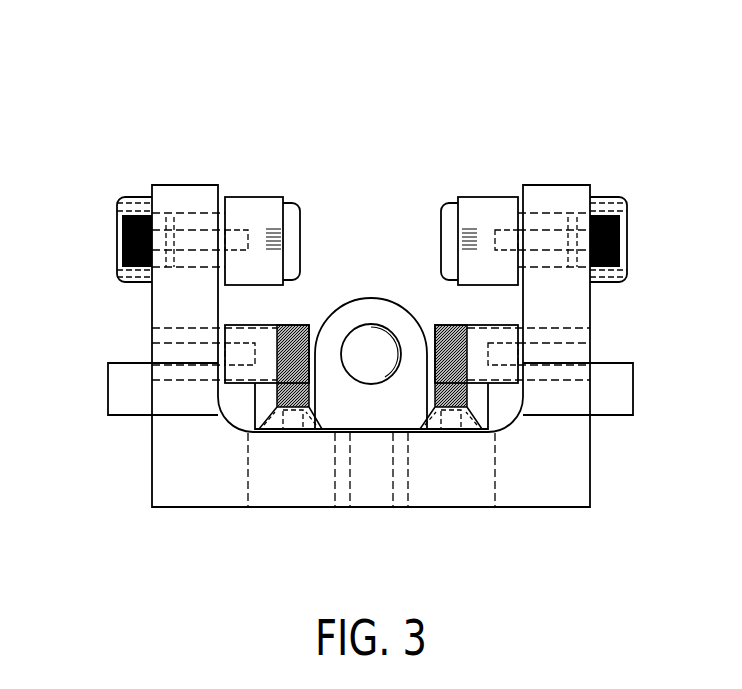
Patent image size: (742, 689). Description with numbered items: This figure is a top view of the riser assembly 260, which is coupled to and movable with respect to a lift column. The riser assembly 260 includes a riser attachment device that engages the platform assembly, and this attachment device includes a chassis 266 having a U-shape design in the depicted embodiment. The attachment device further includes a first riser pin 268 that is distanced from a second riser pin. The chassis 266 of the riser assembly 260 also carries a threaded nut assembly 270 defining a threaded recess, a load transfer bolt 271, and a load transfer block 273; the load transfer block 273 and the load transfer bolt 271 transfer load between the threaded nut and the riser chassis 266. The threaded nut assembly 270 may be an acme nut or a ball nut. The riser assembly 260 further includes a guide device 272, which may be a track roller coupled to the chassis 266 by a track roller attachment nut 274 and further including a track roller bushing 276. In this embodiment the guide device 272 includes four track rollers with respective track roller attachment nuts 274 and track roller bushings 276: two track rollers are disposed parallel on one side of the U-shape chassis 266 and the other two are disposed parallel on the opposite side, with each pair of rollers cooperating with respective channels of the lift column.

The riser assembly 260 is at (124, 110).
The chassis 266 is at (366, 510).
The first riser pin 268 is at (108, 388).
The threaded nut assembly 270 is at (371, 324).
The load transfer bolt 271 is at (192, 328).
The guide device 272 is at (257, 197).
The load transfer block 273 is at (247, 383).
The track roller attachment nut 274 is at (604, 200).
The track roller bushing 276 is at (450, 200).